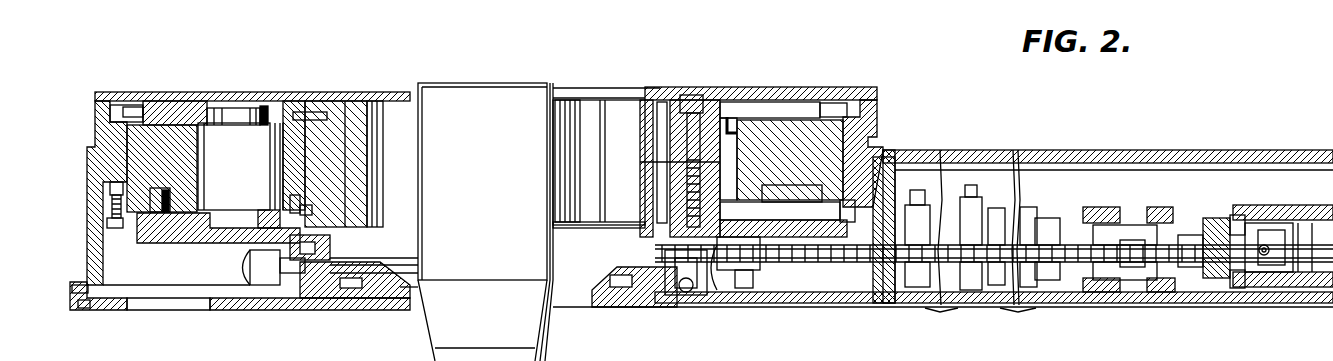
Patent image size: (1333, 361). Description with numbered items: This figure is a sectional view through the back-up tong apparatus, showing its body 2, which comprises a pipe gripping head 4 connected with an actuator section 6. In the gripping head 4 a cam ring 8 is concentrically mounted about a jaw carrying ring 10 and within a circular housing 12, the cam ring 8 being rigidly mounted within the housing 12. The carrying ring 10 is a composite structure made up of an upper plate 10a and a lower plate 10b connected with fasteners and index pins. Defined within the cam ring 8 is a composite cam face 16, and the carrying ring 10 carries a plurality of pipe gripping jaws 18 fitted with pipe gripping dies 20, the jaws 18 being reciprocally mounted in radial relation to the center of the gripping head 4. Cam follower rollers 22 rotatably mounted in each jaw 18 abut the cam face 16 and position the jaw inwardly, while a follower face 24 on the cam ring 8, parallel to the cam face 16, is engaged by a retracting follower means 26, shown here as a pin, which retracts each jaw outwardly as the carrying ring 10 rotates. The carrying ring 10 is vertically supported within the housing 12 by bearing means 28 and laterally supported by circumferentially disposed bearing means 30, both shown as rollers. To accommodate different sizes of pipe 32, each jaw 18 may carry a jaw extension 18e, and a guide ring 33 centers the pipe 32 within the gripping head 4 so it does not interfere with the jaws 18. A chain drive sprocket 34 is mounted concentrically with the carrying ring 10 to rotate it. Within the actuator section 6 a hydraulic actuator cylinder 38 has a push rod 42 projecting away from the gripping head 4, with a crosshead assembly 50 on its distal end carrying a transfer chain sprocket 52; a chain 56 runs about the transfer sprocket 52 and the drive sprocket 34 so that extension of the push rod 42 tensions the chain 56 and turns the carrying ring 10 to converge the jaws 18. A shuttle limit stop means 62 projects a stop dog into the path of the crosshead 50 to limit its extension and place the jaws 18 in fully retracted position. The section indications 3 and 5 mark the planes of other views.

The body 2 is at (970, 150).
The section line 3 is at (1188, 275).
The pipe gripping head 4 is at (634, 90).
The section line 5 is at (1290, 150).
The actuator section 6 is at (1105, 150).
The cam ring 8 is at (155, 125).
The jaw carrying ring 10 is at (200, 92).
The upper plate 10a is at (310, 110).
The lower plate 10b is at (325, 285).
The circular housing 12 is at (873, 150).
The composite cam face 16 is at (215, 120).
The pipe gripping jaws 18 is at (315, 130).
The jaw extension 18e is at (350, 115).
The pipe gripping dies 20 is at (378, 143).
The cam follower rollers 22 is at (235, 213).
The follower face 24 is at (180, 212).
The retracting follower means 26 is at (170, 190).
The bearing means 28 is at (258, 262).
The bearing means 30 is at (840, 228).
The pipe 32 is at (472, 86).
The guide ring 33 is at (605, 285).
The chain drive sprocket 34 is at (328, 250).
The second actuator cylinder 38 is at (928, 285).
The push rod 42 is at (1023, 280).
The crosshead assembly 50 is at (1093, 207).
The transfer chain sprocket 52 is at (1101, 282).
The chain 56 is at (817, 262).
The shuttle limit stop means 62 is at (1263, 223).